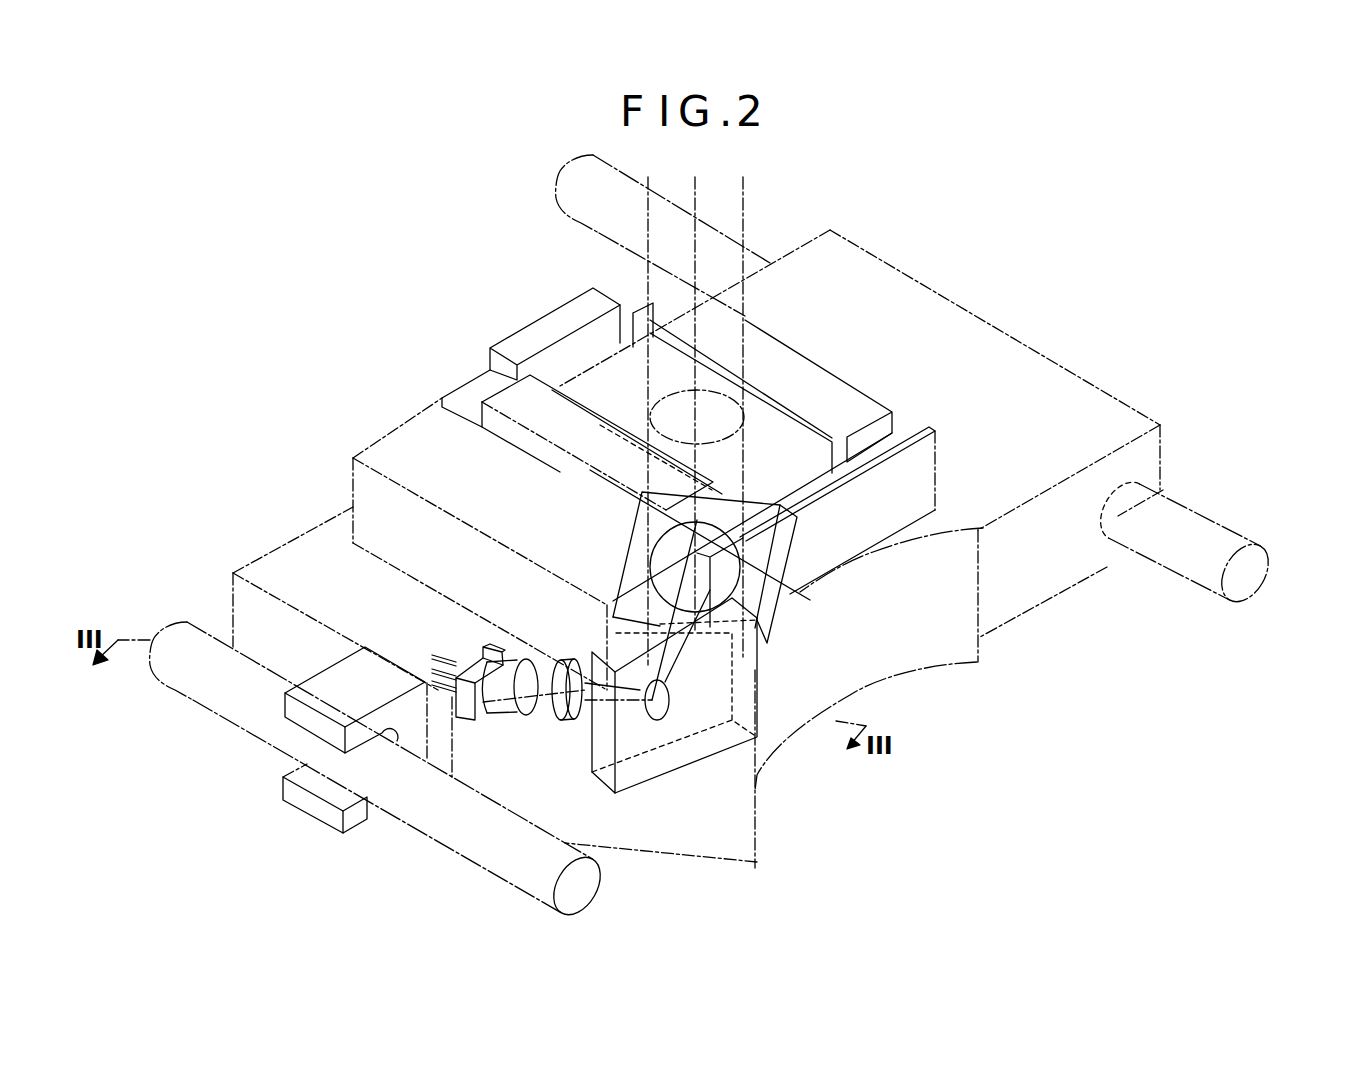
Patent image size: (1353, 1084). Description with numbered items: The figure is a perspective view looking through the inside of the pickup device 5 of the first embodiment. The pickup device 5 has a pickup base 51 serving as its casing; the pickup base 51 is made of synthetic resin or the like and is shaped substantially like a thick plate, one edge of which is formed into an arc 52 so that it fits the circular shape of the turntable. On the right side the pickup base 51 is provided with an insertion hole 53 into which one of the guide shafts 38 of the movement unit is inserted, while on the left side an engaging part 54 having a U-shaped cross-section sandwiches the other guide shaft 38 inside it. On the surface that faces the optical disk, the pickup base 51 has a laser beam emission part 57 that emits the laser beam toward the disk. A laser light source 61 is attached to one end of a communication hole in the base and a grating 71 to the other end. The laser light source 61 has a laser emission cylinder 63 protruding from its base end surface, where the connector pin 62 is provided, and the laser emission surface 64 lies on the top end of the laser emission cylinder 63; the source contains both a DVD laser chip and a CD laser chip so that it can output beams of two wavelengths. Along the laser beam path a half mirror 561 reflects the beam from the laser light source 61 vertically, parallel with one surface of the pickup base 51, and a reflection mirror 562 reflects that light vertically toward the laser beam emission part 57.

The pickup device 5 is at (345, 390).
The guide shaft 38 is at (1197, 588).
The pickup base 51 is at (1040, 372).
The arc 52 is at (910, 647).
The insertion hole 53 is at (1145, 478).
The engaging part 54 is at (320, 800).
The laser beam emission part 57 is at (655, 397).
The half mirror 561 is at (692, 752).
The reflection mirror 562 is at (632, 577).
The laser light source 61 is at (470, 656).
The connector pin 62 is at (434, 660).
The laser emission cylinder 63 is at (505, 690).
The laser emission surface 64 is at (540, 712).
The grating 71 is at (566, 722).